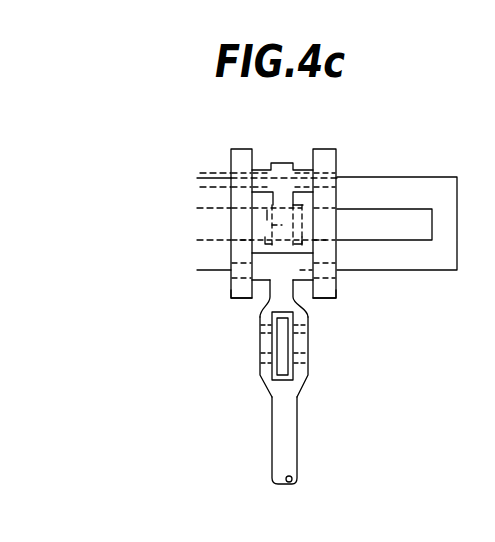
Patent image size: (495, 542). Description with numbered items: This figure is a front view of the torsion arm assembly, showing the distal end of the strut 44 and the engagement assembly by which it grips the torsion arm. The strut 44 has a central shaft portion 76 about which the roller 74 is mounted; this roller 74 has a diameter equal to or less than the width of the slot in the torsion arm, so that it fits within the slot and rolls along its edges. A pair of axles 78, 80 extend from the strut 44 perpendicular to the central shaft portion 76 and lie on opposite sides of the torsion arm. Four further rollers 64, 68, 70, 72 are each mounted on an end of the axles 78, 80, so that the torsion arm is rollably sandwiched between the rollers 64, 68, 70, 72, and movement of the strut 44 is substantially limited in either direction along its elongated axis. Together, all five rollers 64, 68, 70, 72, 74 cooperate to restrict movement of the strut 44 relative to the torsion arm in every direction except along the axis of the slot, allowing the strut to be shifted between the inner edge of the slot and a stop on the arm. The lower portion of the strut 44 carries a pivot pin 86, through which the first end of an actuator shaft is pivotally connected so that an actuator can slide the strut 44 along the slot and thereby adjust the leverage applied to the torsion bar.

The roller 70 is at (243, 148).
The roller 64 is at (327, 147).
The axle 78 is at (306, 168).
The roller 74 is at (267, 214).
The central shaft portion 76 is at (282, 225).
The roller 72 is at (231, 303).
The roller 68 is at (337, 295).
The axle 80 is at (301, 283).
The pivot pin 86 is at (308, 343).
The strut 44 is at (272, 419).